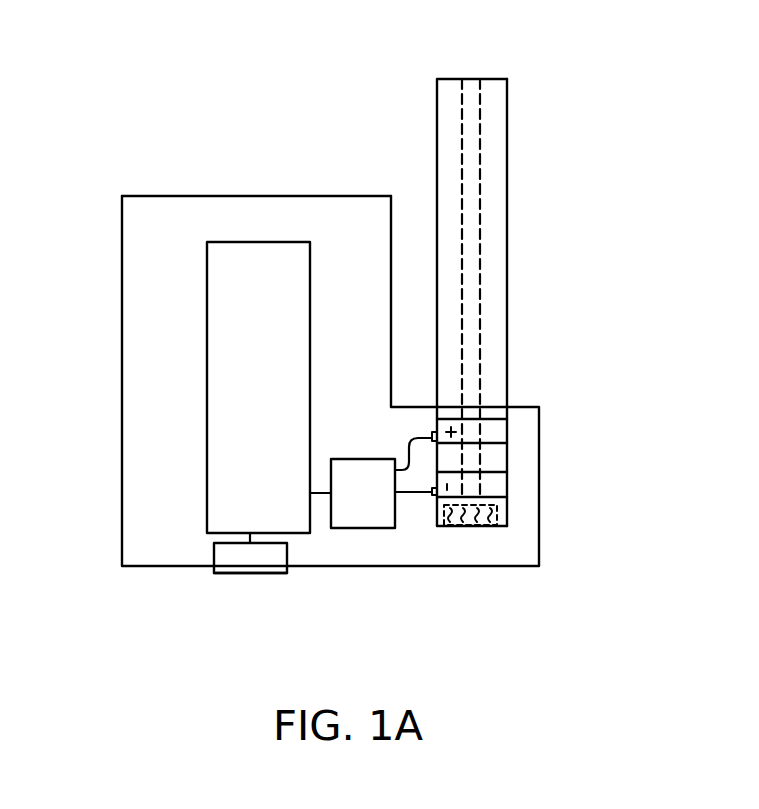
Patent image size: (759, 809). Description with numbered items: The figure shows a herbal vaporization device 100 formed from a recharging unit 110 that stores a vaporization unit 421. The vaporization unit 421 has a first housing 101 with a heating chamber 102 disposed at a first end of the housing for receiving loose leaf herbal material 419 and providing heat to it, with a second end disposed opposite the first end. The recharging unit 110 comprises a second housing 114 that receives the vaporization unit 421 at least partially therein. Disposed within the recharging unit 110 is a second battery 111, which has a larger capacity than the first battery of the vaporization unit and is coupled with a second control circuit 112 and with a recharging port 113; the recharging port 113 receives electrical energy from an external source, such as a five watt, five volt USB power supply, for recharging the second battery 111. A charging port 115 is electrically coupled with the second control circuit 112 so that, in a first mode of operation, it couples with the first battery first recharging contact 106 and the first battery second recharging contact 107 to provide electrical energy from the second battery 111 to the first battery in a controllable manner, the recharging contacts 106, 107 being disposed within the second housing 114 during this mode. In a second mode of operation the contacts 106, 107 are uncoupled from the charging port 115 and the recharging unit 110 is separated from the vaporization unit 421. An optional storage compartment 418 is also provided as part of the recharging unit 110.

The herbal vaporization device 100 is at (119, 44).
The first housing 101 is at (473, 79).
The heating chamber 102 is at (487, 526).
The first battery first recharging contact 106 is at (507, 492).
The first battery second recharging contact 107 is at (507, 435).
The recharging unit 110 is at (192, 218).
The second battery 111 is at (230, 393).
The second control circuit 112 is at (355, 507).
The recharging port 113 is at (225, 558).
The second housing 114 is at (297, 196).
The charging port 115 is at (405, 476).
The storage compartment 418 is at (278, 575).
The loose leaf herbal material 419 is at (472, 526).
The vaporization unit 421 is at (507, 120).